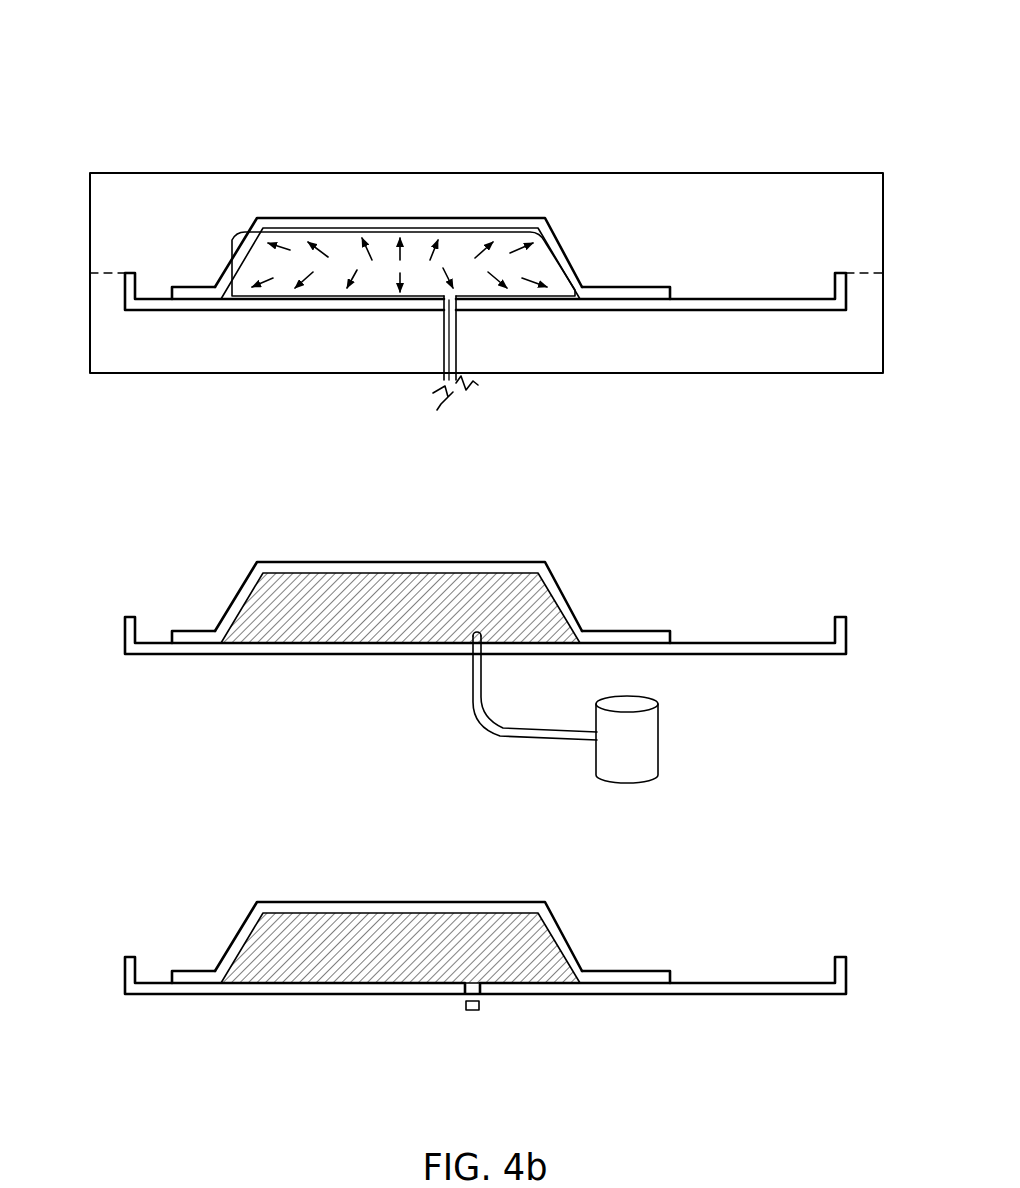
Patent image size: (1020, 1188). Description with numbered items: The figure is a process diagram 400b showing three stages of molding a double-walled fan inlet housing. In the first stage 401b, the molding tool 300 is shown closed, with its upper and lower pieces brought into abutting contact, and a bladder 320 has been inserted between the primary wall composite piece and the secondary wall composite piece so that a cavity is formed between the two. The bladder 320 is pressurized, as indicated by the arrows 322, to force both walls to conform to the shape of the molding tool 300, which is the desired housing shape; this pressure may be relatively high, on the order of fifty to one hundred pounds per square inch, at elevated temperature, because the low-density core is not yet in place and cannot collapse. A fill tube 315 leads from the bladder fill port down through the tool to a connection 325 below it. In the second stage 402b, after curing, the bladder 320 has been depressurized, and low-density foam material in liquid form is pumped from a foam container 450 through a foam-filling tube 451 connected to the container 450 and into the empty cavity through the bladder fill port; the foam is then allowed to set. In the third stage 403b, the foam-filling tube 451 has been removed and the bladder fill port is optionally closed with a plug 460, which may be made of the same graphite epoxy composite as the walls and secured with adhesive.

The process diagram 400b is at (471, 533).
The first step 401b is at (471, 243).
The second step 402b is at (469, 636).
The third step 403b is at (469, 941).
The molding tool 300 is at (553, 173).
The bladder 320 is at (382, 240).
The bladder pressurization 322 is at (272, 281).
The fill tube 315 is at (457, 350).
The foam supply connection 325 is at (433, 393).
The foam-filling tube 451 is at (475, 710).
The foam container 450 is at (600, 770).
The plug 460 is at (471, 1012).